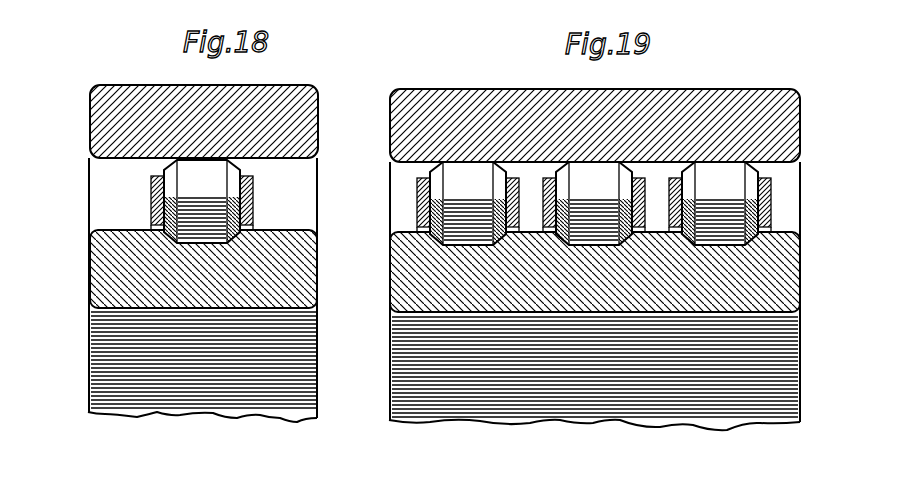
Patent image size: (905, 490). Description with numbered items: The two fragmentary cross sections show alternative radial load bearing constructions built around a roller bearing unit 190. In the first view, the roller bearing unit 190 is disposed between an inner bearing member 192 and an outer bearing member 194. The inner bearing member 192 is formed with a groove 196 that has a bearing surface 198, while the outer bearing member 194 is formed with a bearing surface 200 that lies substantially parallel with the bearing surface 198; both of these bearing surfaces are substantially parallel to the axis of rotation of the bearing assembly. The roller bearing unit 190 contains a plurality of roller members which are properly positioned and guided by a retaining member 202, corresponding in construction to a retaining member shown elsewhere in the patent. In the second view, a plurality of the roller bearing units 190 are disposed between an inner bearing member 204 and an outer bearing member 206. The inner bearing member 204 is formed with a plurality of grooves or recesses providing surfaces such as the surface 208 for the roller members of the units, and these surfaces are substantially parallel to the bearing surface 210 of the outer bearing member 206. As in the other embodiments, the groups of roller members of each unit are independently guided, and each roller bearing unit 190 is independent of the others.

In FIG. 18, the roller bearing unit 190 is at (193, 197).
In FIG. 19, the roller bearing unit 190 is at (707, 177).
In FIG. 18, the inner bearing member 192 is at (302, 297).
In FIG. 18, the outer bearing member 194 is at (280, 86).
In FIG. 18, the groove 196 is at (238, 237).
In FIG. 18, the bearing surface 198 is at (190, 246).
In FIG. 18, the bearing surface 200 is at (284, 161).
In FIG. 18, the retaining member 202 is at (149, 184).
In FIG. 19, the inner bearing member 204 is at (400, 278).
In FIG. 19, the outer bearing member 206 is at (455, 88).
In FIG. 19, the surface 208 is at (598, 248).
In FIG. 19, the bearing surface 210 is at (411, 158).